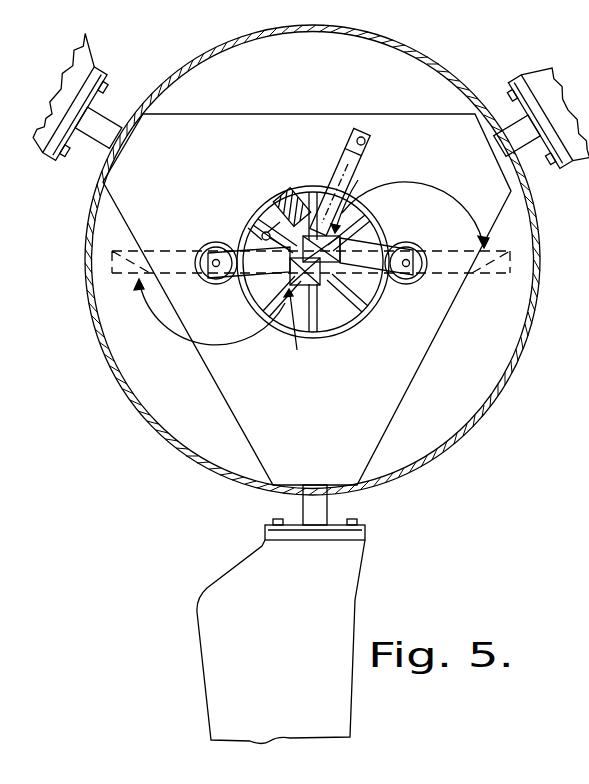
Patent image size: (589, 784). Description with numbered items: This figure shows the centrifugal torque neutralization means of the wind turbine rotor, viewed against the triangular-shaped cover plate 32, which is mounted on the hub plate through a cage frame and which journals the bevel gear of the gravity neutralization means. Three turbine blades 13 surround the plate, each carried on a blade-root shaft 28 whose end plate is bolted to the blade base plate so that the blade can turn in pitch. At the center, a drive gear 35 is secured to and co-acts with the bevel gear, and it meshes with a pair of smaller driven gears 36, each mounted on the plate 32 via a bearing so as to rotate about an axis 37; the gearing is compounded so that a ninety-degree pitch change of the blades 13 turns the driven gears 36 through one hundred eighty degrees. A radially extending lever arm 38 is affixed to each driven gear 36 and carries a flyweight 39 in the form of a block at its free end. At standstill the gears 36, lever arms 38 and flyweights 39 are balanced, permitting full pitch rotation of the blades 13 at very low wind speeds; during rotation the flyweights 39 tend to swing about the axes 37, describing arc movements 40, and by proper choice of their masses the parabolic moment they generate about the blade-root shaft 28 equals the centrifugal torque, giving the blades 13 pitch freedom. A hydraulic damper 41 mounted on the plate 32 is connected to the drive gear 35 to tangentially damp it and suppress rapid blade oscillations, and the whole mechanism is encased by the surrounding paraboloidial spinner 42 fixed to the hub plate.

The turbine blade 13 is at (90, 53).
The blade-root shaft 28 is at (117, 127).
The triangular-shaped cover plate 32 is at (422, 362).
The drive gear 35 is at (278, 185).
The driven gear 36 is at (217, 241).
The axis 37 is at (210, 275).
The lever arm 38 is at (247, 272).
The flyweight 39 is at (332, 264).
The arc movement 40 is at (408, 182).
The hydraulic damper 41 is at (340, 153).
The paraboloidial spinner 42 is at (530, 338).